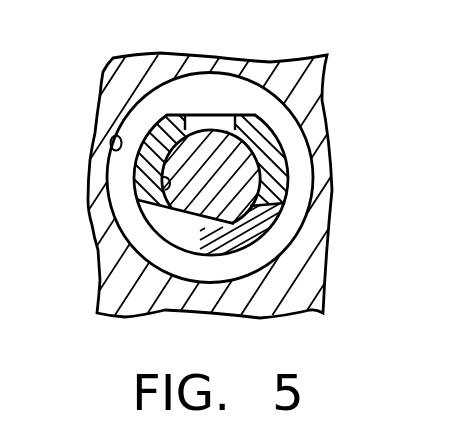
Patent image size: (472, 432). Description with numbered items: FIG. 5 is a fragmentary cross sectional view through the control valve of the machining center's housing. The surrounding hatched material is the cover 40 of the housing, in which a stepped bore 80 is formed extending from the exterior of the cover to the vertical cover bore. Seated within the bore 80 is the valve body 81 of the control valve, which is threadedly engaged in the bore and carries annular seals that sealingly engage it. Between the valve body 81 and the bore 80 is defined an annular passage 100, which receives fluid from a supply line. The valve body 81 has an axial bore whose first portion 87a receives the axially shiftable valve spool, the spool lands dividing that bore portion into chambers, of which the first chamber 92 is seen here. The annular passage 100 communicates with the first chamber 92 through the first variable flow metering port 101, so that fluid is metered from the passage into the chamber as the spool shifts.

The cover 40 is at (313, 104).
The annular passage 100 is at (297, 210).
The first chamber 92 is at (262, 172).
The valve body 81 is at (255, 244).
The first variable flow metering port 101 is at (207, 117).
The bore 80 is at (112, 147).
The first portion of axial bore 87a is at (163, 199).